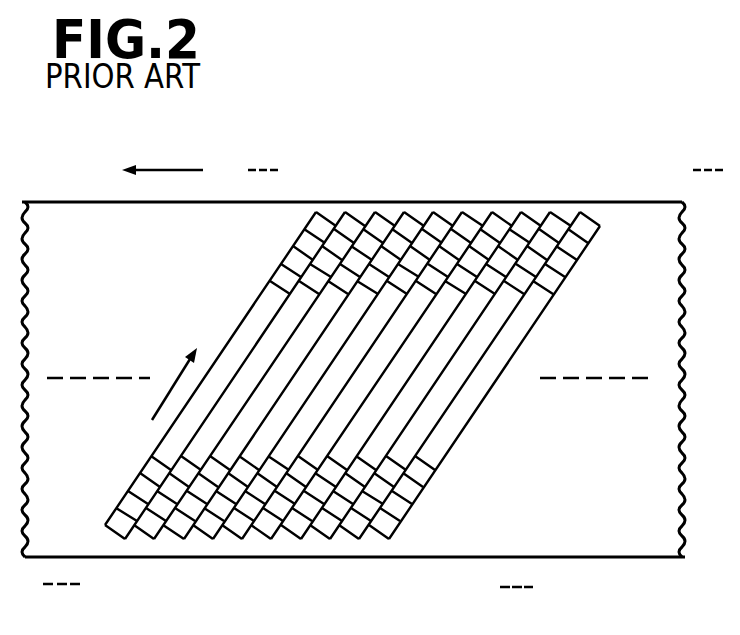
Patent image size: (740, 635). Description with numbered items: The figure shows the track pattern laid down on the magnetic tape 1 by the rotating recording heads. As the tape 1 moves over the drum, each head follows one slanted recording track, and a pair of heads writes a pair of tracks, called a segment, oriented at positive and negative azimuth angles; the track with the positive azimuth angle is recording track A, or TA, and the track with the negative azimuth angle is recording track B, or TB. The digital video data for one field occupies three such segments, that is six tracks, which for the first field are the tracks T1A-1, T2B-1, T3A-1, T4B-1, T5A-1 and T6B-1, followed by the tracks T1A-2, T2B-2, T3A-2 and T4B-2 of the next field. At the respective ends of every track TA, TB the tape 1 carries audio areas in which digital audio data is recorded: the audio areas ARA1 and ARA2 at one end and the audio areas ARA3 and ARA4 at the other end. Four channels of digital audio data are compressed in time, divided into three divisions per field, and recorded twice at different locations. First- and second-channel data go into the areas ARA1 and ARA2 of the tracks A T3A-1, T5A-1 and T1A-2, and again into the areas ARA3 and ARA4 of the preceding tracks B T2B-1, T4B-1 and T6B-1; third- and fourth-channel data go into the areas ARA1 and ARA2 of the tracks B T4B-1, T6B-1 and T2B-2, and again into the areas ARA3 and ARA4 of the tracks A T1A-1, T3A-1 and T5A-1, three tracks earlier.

The magnetic tape 1 is at (610, 558).
The recording track A TA is at (366, 146).
The recording track B TB is at (407, 146).
The recording track A T1A-1 is at (337, 209).
The recording track B T2B-1 is at (142, 537).
The recording track A T3A-1 is at (392, 209).
The recording track B T4B-1 is at (203, 536).
The recording track A T5A-1 is at (452, 211).
The recording track B T6B-1 is at (258, 537).
The recording track A T1A-2 is at (508, 212).
The recording track B T2B-2 is at (323, 539).
The recording track A T3A-2 is at (572, 212).
The recording track B T4B-2 is at (382, 538).
The audio area ARA1 is at (428, 529).
The audio area ARA2 is at (440, 495).
The audio area ARA3 is at (266, 257).
The audio area ARA4 is at (270, 221).